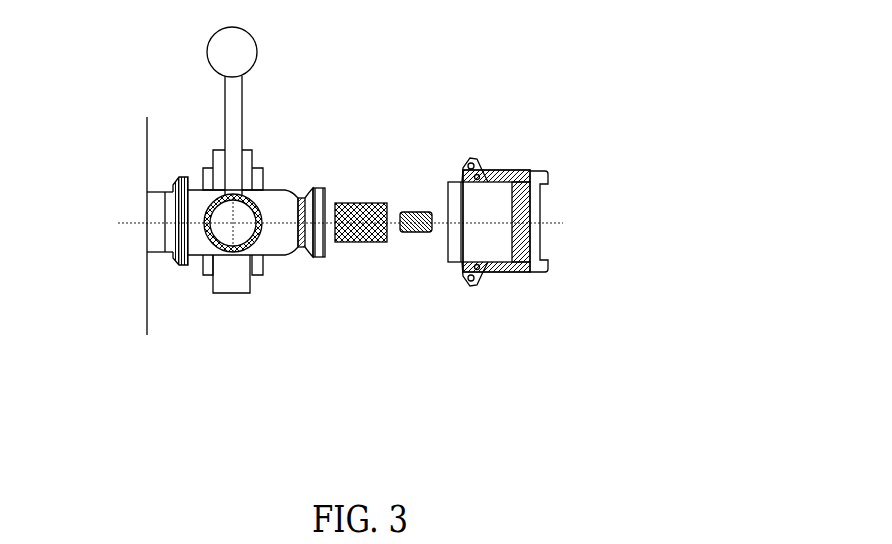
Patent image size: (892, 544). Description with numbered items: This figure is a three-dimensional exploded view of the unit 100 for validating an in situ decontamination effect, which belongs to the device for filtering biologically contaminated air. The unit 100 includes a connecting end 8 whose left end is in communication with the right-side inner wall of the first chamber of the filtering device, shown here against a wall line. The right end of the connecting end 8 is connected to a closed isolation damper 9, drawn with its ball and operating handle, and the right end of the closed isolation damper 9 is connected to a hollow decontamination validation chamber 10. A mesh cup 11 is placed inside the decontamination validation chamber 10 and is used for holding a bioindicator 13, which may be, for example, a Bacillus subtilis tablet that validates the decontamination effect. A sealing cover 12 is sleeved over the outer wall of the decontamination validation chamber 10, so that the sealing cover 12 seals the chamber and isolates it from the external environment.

The unit for validating an in situ decontamination effect 100 is at (355, 202).
The connecting end 8 is at (180, 268).
The closed isolation damper 9 is at (249, 256).
The decontamination validation chamber 10 is at (279, 246).
The mesh cup 11 is at (348, 243).
The bioindicator 13 is at (417, 232).
The sealing cover 12 is at (520, 272).